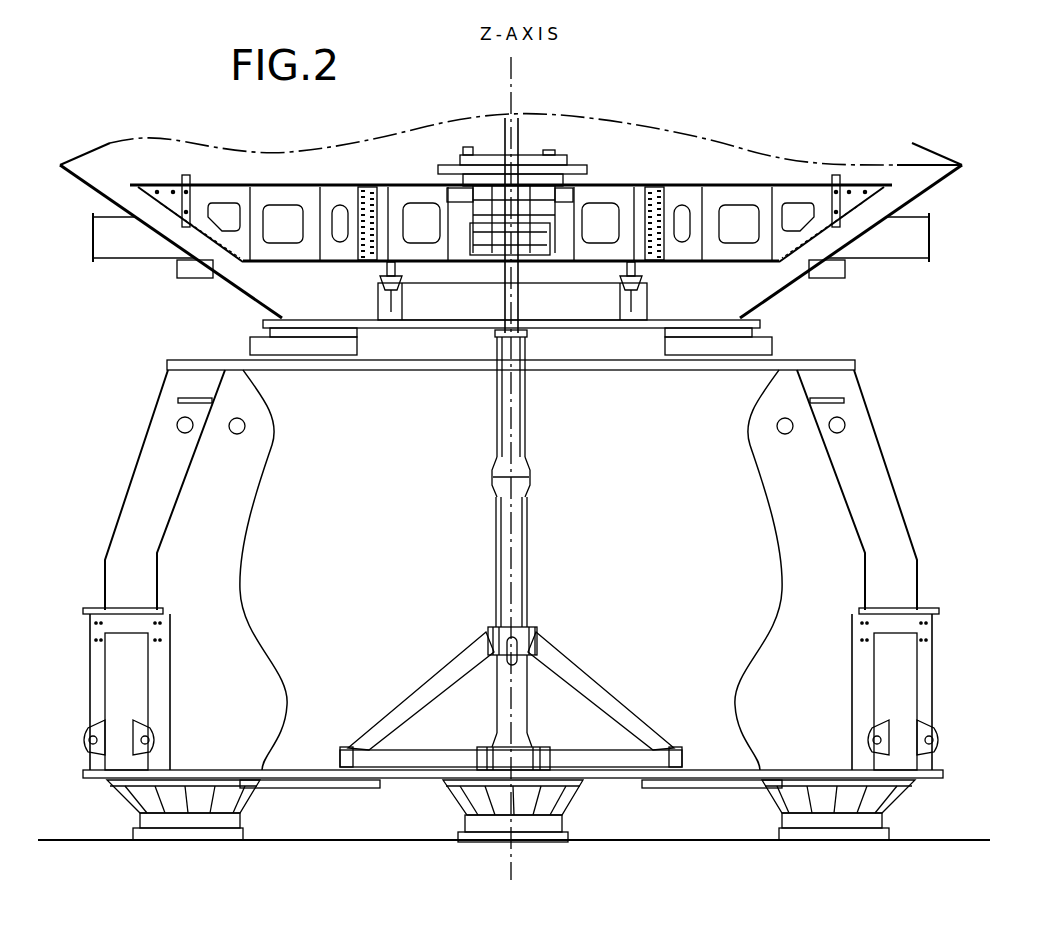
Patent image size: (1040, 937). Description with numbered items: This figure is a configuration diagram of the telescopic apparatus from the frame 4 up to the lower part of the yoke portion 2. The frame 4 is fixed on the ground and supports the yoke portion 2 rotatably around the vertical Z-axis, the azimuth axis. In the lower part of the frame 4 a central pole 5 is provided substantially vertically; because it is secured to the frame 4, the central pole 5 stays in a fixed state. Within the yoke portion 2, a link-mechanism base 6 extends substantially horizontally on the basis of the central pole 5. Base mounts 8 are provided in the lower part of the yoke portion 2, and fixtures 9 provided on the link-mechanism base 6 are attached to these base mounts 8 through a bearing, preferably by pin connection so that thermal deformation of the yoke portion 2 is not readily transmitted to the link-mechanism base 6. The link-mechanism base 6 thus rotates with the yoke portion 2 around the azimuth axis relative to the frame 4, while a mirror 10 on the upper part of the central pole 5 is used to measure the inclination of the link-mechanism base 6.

The yoke portion 2 is at (933, 188).
The frame 4 is at (905, 502).
The central pole 5 is at (527, 538).
The link-mechanism base 6 is at (687, 185).
The base mount 8 is at (645, 298).
The fixture 9 is at (650, 270).
The mirror 10 is at (557, 227).